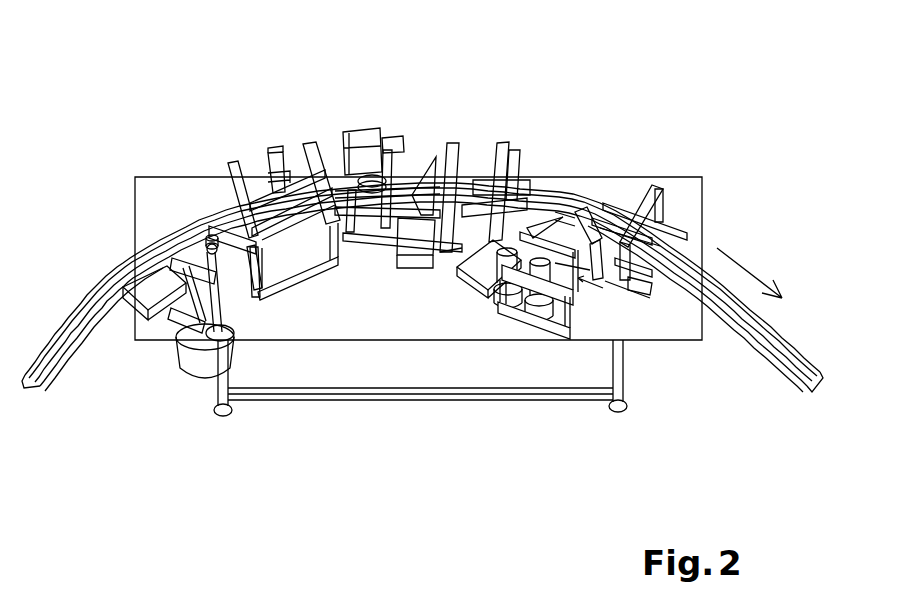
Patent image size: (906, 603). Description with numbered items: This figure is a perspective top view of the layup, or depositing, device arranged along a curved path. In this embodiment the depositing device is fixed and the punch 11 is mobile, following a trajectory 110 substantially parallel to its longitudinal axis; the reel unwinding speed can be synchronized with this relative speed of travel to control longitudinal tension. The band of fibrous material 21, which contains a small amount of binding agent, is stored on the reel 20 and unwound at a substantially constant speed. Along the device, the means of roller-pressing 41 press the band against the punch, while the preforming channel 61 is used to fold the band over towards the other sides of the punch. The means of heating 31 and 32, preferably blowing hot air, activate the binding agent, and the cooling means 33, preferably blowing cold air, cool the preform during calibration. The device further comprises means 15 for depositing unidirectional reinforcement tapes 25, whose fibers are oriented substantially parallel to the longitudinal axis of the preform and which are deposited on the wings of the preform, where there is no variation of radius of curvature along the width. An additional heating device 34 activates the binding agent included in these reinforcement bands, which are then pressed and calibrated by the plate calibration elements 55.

The punch 11 is at (110, 287).
The means of roller-pressing 41 is at (204, 222).
The trajectory 110 is at (747, 270).
The means of heating 31 is at (128, 315).
The reel 20 is at (240, 332).
The band of fibrous material 21 is at (190, 355).
The preforming channel 61 is at (297, 222).
The means of heating 32 is at (363, 140).
The cooling means 33 is at (412, 268).
The additional heating device 34 is at (462, 277).
The means for depositing unidirectional reinforcement tapes 15 is at (535, 322).
The unidirectional reinforcement tape 25 is at (578, 213).
The plate calibration element 55 is at (650, 268).